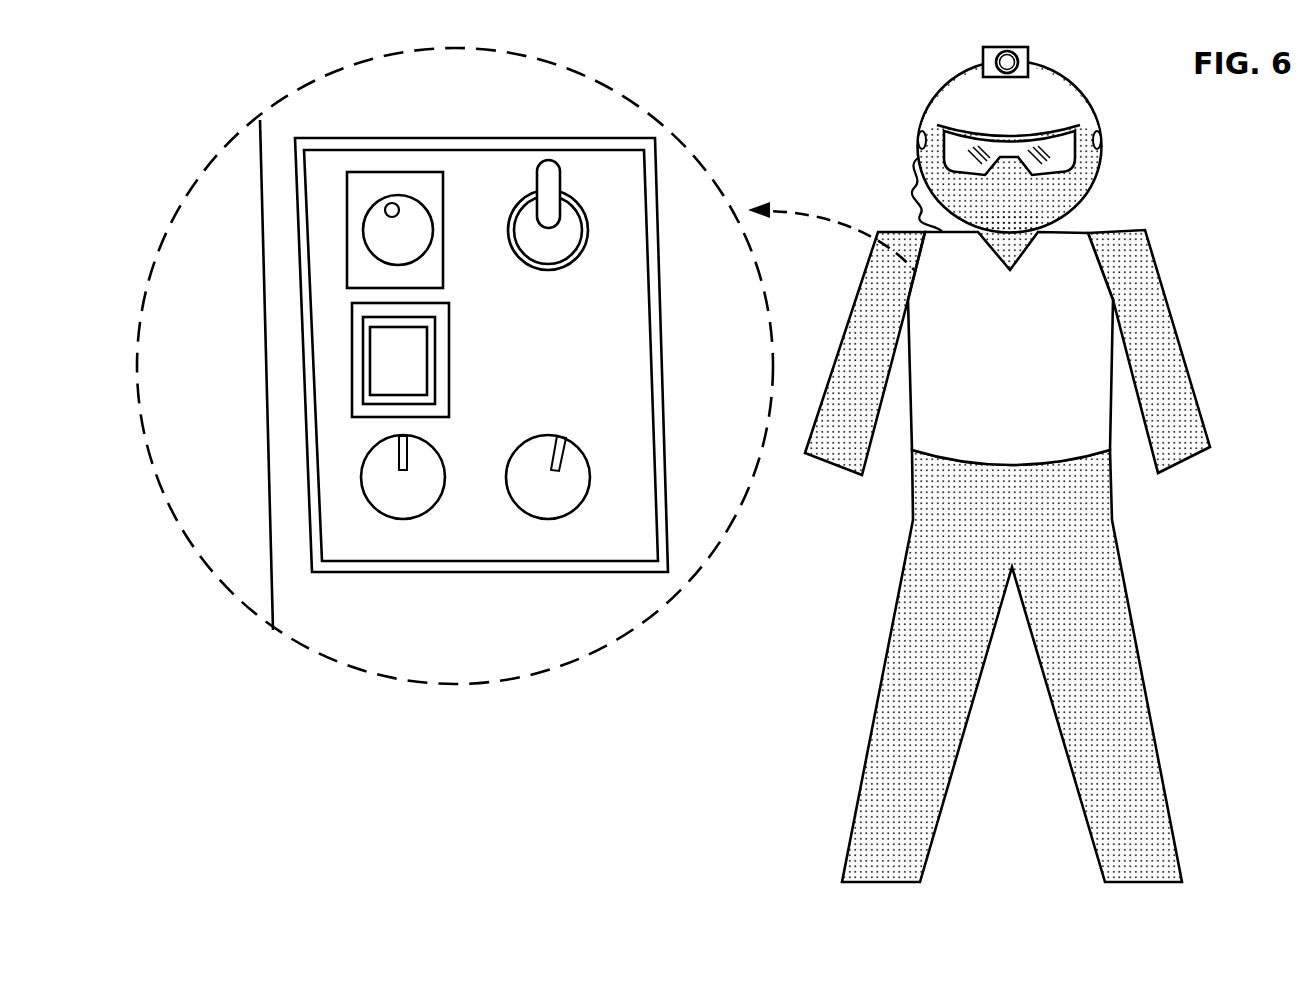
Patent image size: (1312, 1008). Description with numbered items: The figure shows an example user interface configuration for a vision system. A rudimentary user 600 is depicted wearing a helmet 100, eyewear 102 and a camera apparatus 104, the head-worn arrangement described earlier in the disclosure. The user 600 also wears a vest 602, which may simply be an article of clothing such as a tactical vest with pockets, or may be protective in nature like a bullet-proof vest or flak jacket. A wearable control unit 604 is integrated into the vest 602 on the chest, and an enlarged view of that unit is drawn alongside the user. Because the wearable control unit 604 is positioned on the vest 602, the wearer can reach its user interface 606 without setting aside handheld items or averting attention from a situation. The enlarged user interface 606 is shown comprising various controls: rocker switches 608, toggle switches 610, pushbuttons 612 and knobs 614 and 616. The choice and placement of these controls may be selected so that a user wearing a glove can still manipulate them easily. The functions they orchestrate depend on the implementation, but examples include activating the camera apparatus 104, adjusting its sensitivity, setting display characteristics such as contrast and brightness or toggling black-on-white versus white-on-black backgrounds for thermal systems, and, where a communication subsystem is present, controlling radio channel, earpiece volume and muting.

The helmet 100 is at (915, 123).
The eyewear 102 is at (1073, 170).
The camera apparatus 104 is at (1022, 79).
The user 600 is at (1152, 248).
The vest 602 is at (910, 437).
The wearable control unit 604 is at (660, 250).
The user interface 606 is at (650, 312).
The rocker switches 608 is at (448, 224).
The toggle switches 610 is at (590, 224).
The pushbuttons 612 is at (450, 350).
The knob 614 is at (448, 467).
The knob 616 is at (593, 467).